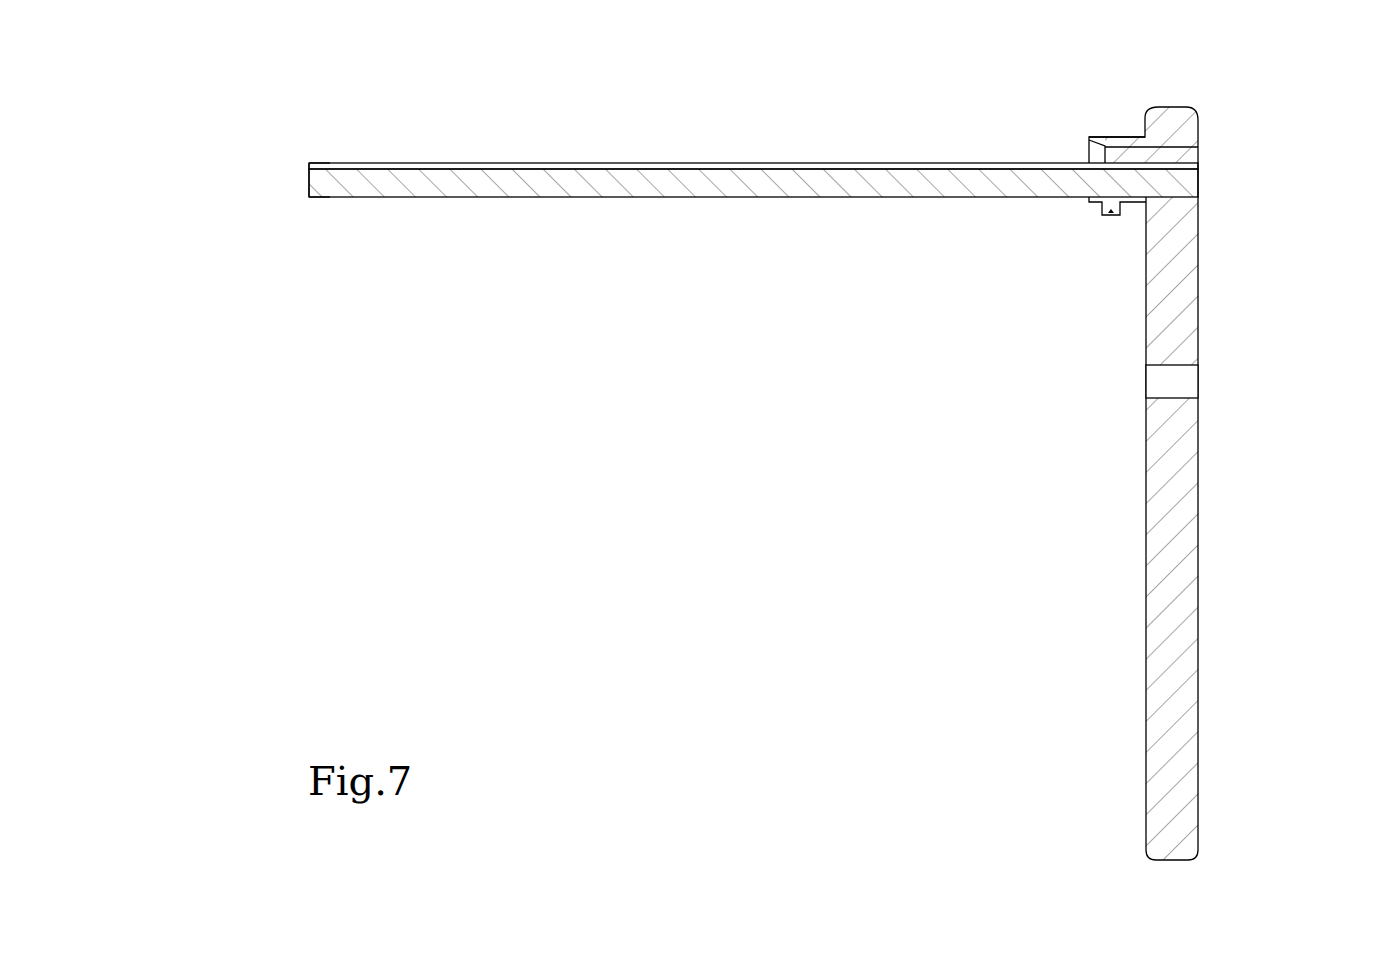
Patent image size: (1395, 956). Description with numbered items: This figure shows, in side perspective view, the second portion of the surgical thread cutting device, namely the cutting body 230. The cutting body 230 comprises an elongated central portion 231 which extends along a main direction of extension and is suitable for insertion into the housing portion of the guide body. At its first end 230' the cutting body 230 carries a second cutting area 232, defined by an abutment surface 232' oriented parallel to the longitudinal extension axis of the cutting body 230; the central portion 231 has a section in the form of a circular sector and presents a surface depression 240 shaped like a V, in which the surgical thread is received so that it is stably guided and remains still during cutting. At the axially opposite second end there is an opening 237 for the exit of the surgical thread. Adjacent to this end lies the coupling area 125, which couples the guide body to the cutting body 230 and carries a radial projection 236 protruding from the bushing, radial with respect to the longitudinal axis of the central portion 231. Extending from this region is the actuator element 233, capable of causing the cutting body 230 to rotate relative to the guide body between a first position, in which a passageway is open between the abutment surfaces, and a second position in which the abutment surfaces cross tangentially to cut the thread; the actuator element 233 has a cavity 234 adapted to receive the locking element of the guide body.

The coupling area 125 is at (1112, 106).
The cutting body 230 is at (751, 448).
The first end 230' is at (251, 253).
The elongated central portion 231 is at (664, 183).
The second cutting area 232 is at (221, 140).
The abutment surface 232' is at (324, 106).
The actuator element 233 is at (1172, 542).
The cavity 234 is at (1160, 383).
The radial projection 236 is at (1110, 214).
The opening 237 is at (1187, 155).
The surface depression 240 is at (545, 165).